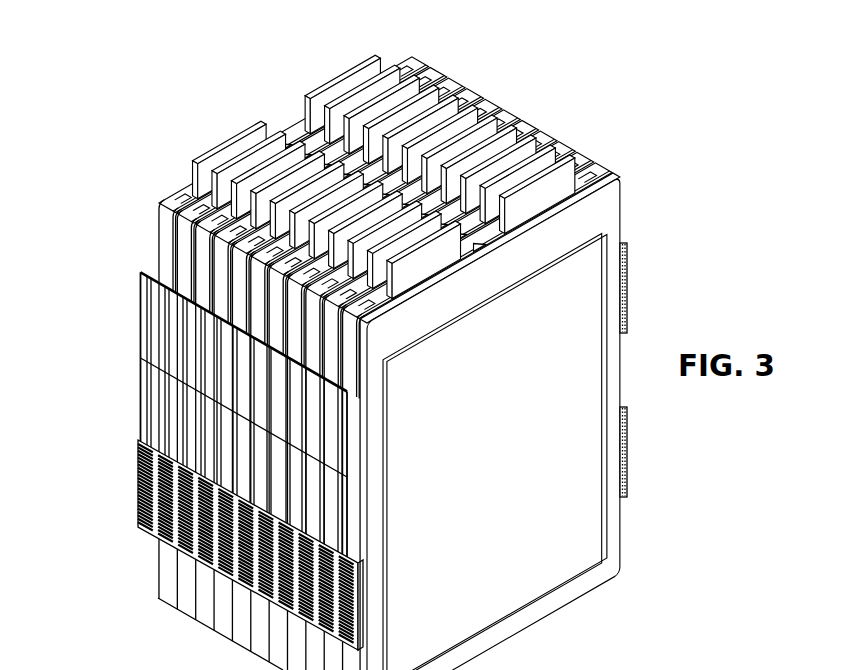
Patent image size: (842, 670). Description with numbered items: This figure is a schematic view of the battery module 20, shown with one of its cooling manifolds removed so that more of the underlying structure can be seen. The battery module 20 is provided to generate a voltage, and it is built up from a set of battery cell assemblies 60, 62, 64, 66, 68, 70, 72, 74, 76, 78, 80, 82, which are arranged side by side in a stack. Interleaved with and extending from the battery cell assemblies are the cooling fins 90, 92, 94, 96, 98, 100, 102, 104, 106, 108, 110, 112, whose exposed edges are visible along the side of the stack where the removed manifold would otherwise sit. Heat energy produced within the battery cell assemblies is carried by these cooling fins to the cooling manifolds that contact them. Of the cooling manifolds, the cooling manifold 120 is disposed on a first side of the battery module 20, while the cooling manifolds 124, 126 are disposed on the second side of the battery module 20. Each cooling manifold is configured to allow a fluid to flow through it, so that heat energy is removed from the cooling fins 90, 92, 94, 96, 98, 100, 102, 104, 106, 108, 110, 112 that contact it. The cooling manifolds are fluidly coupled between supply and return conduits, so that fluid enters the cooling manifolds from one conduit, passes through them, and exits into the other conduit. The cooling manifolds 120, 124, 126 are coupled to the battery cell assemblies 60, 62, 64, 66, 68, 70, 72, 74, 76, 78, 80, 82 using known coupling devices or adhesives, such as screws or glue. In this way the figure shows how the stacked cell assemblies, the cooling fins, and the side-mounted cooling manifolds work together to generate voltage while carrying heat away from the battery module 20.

The battery module 20 is at (373, 335).
The battery cell assembly 60 is at (617, 174).
The battery cell assembly 62 is at (601, 163).
The battery cell assembly 64 is at (584, 152).
The battery cell assembly 66 is at (568, 143).
The battery cell assembly 68 is at (551, 133).
The battery cell assembly 70 is at (532, 122).
The battery cell assembly 72 is at (513, 110).
The battery cell assembly 74 is at (497, 100).
The battery cell assembly 76 is at (480, 93).
The battery cell assembly 78 is at (462, 85).
The battery cell assembly 80 is at (439, 75).
The battery cell assembly 82 is at (418, 64).
The cooling fin 90 is at (340, 405).
The cooling fin 92 is at (320, 420).
The cooling fin 94 is at (302, 437).
The cooling fin 96 is at (286, 420).
The cooling fin 98 is at (268, 402).
The cooling fin 100 is at (250, 382).
The cooling fin 102 is at (233, 360).
The cooling fin 104 is at (217, 348).
The cooling fin 106 is at (201, 337).
The cooling fin 108 is at (183, 322).
The cooling fin 110 is at (160, 307).
The cooling fin 112 is at (147, 292).
The cooling manifold 120 is at (138, 479).
The cooling manifold 124 is at (628, 447).
The cooling manifold 126 is at (628, 283).